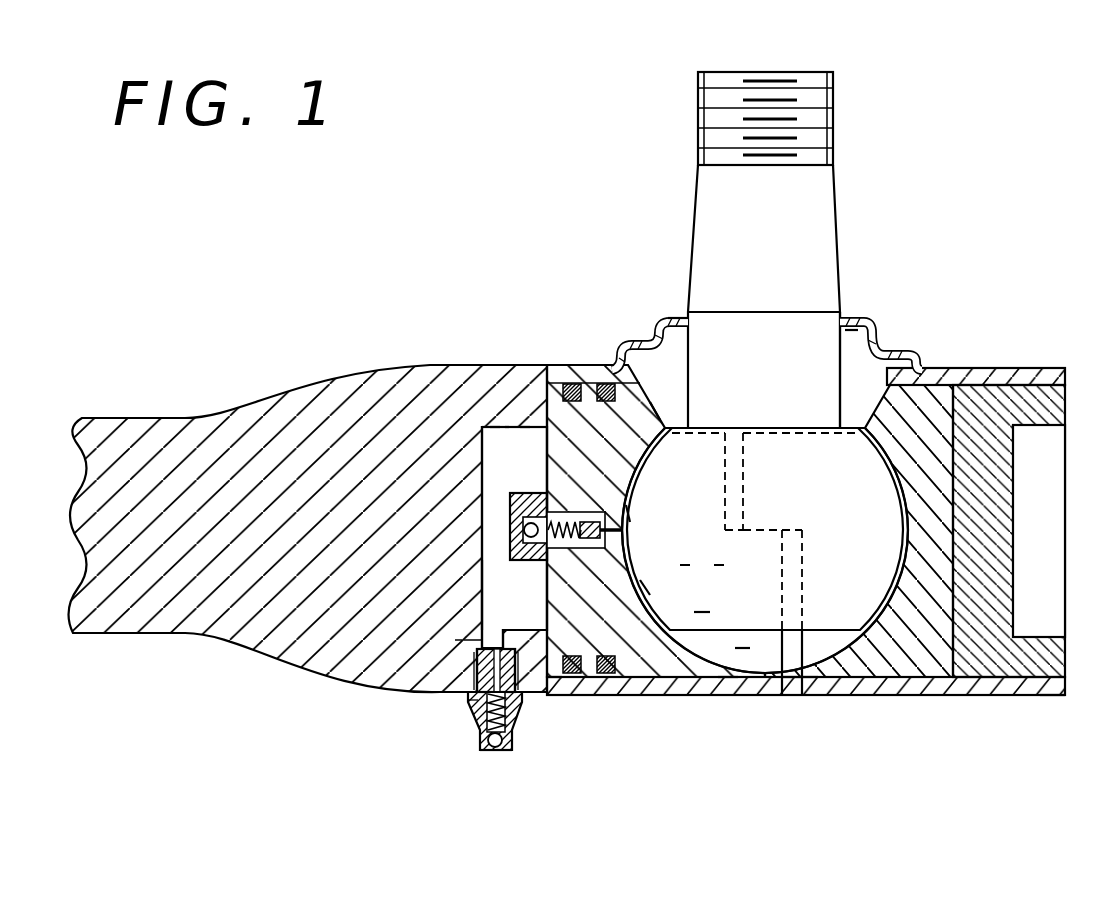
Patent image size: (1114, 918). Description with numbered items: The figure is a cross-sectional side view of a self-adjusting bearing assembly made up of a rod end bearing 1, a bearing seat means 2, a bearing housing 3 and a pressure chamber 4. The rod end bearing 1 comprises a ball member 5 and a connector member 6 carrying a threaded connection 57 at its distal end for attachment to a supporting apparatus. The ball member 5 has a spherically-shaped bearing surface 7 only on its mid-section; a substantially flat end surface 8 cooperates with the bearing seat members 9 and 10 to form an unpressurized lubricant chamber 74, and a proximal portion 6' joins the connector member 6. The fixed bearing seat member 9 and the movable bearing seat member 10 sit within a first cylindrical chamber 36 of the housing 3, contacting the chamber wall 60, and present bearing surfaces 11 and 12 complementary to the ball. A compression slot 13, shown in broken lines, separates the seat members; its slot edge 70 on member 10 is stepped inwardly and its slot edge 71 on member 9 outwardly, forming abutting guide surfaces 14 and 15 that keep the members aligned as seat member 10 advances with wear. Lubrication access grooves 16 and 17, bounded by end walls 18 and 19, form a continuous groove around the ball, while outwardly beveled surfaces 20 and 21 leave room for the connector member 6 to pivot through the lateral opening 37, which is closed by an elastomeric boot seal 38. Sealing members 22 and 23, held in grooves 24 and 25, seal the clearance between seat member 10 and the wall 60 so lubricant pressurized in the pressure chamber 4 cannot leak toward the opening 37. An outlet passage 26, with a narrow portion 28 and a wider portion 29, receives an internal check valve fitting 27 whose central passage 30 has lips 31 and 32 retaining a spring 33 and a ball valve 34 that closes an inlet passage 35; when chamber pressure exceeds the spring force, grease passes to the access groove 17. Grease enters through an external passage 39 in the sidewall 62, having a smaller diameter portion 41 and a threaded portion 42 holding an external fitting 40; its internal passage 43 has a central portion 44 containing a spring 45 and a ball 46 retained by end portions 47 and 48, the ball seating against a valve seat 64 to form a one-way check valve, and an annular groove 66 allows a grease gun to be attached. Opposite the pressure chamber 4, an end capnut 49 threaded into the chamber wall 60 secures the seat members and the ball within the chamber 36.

The rod end bearing 1 is at (852, 350).
The bearing seat means 2 is at (935, 395).
The bearing housing 3 is at (280, 402).
The pressure chamber 4 is at (490, 425).
The ball member 5 is at (723, 680).
The connector member 6 is at (797, 294).
The proximal portion 6' is at (817, 370).
The bearing surface 7 is at (702, 564).
The end surface 8 is at (762, 635).
The bearing seat member 9 is at (948, 420).
The bearing seat member 10 is at (588, 428).
The bearing surface 11 is at (890, 565).
The bearing surface 12 is at (632, 512).
The compression slot 13 is at (836, 658).
The guide surface 14 is at (793, 530).
The guide surface 15 is at (732, 535).
The lubrication access groove 16 is at (930, 695).
The lubrication access groove 17 is at (701, 615).
The end wall 18 is at (868, 437).
The end wall 19 is at (671, 455).
The beveled surface 20 is at (882, 367).
The beveled surface 21 is at (657, 400).
The sealing member 22 is at (622, 677).
The sealing member 23 is at (582, 677).
The groove 24 is at (633, 677).
The groove 25 is at (552, 678).
The outlet passage 26 is at (552, 483).
The internal check valve fitting 27 is at (508, 437).
The first narrow portion 28 is at (645, 585).
The second wider portion 29 is at (505, 565).
The central passage 30 is at (490, 452).
The lip 31 is at (624, 530).
The lip 32 is at (515, 545).
The spring 33 is at (548, 556).
The ball valve 34 is at (510, 497).
The inlet passage 35 is at (518, 530).
The first cylindrical chamber 36 is at (803, 677).
The lateral opening 37 is at (672, 350).
The boot seal 38 is at (628, 352).
The external passage 39 is at (476, 684).
The external fitting 40 is at (502, 770).
The smaller diameter portion 41 is at (455, 640).
The larger diameter threaded portion 42 is at (476, 702).
The internal passage 43 is at (476, 718).
The central portion 44 is at (478, 735).
The spring 45 is at (515, 735).
The ball valve 46 is at (510, 757).
The end portion 47 is at (470, 674).
The end portion 48 is at (488, 753).
The end capnut 49 is at (1033, 695).
The threaded connection 57 is at (757, 92).
The cylindrical chamber wall 60 is at (787, 690).
The sidewall 62 is at (498, 425).
The valve seat 64 is at (524, 437).
The annular groove 66 is at (480, 733).
The slot edge 70 is at (777, 590).
The slot edge 71 is at (807, 593).
The unpressurized lubricant chamber 74 is at (743, 645).